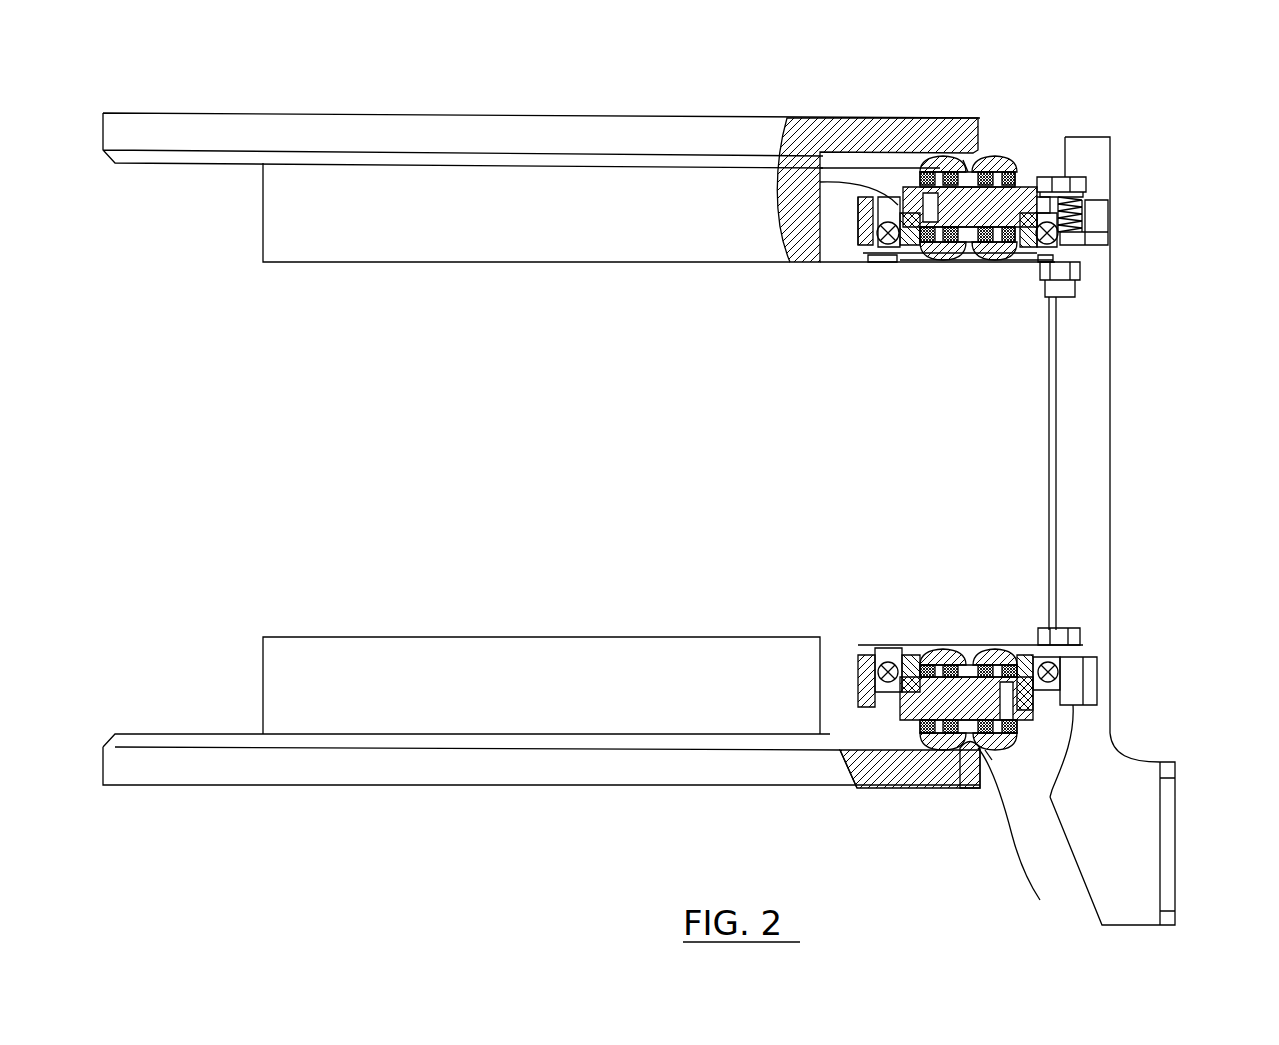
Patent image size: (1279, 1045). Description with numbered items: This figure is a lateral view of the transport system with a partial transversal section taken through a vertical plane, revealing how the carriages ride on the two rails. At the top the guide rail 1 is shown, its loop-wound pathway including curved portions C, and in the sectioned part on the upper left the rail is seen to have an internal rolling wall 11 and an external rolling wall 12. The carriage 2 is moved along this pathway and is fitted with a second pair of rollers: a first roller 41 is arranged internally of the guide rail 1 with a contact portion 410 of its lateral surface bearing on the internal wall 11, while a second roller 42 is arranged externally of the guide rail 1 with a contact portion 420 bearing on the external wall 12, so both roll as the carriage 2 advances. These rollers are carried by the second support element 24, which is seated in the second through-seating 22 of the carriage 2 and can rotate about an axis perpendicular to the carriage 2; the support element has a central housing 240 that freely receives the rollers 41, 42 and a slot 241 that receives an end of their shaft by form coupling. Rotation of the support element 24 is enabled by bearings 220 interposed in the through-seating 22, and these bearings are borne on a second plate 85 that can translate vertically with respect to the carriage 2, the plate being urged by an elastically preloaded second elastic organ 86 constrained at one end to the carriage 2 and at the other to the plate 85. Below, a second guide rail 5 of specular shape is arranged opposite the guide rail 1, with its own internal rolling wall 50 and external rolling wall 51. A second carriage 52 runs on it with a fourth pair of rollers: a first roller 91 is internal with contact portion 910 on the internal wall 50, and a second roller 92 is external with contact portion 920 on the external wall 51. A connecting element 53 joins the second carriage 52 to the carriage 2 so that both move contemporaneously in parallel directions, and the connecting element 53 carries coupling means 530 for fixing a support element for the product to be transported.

The guide rail 1 is at (185, 175).
The carriage 2 is at (1030, 168).
The second guide rail 5 is at (335, 730).
The internal rolling wall 11 is at (968, 160).
The external rolling wall 12 is at (1035, 95).
The second through-seating 22 is at (815, 190).
The second support element 24 is at (800, 135).
The first roller 41 is at (935, 160).
The second roller 42 is at (1042, 186).
The internal rolling wall 50 is at (962, 770).
The external rolling wall 51 is at (990, 760).
The second carriage 52 is at (858, 665).
The connecting element 53 is at (1100, 487).
The second plate 85 is at (1060, 300).
The second elastic organ 86 is at (1082, 225).
The first roller 91 is at (862, 782).
The second roller 92 is at (998, 746).
The bearings 220 is at (870, 262).
The central housing 240 is at (915, 262).
The slot 241 is at (862, 160).
The contact portion 410 is at (965, 157).
The contact portion 420 is at (1030, 112).
The coupling means 530 is at (1175, 820).
The contact portion 910 is at (925, 655).
The contact portion 920 is at (1005, 790).
The curved portions C is at (473, 155).